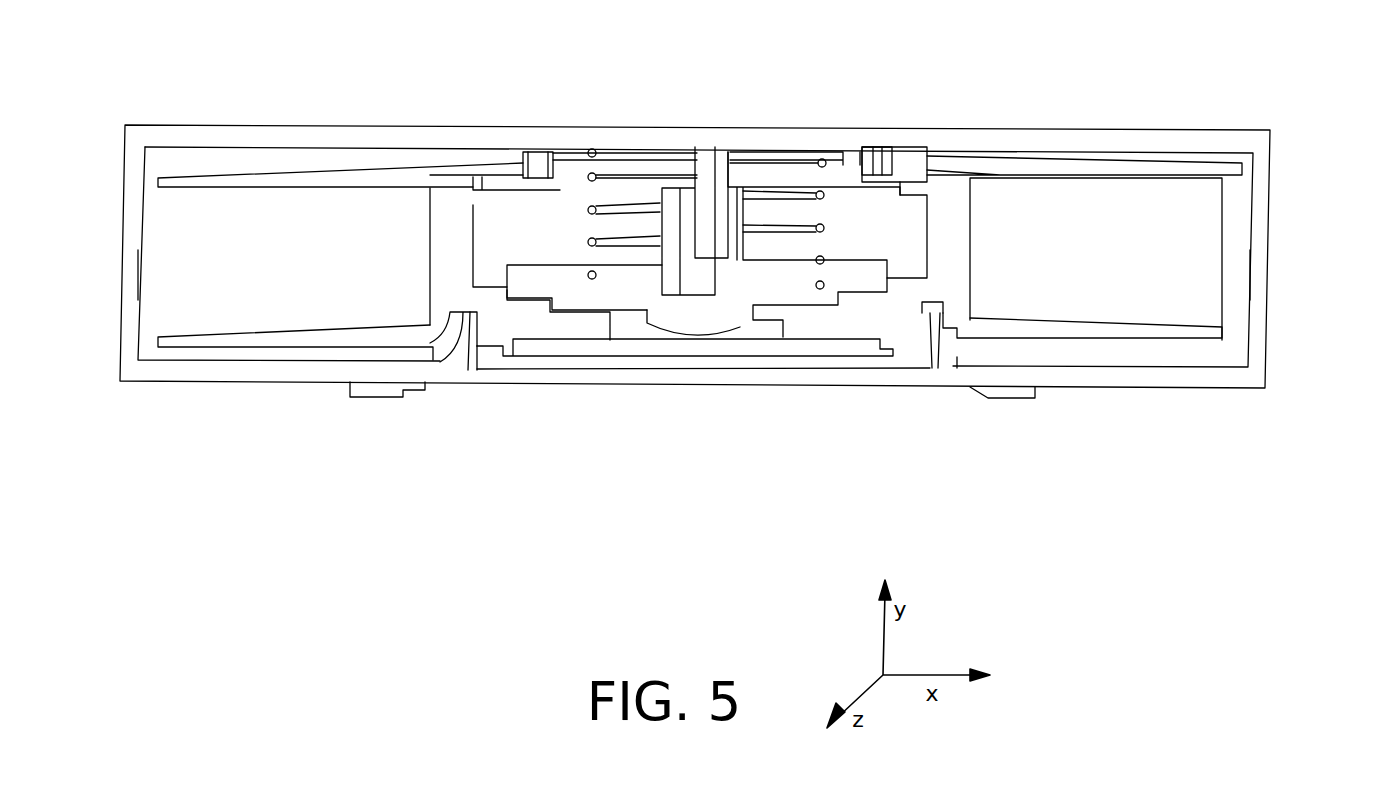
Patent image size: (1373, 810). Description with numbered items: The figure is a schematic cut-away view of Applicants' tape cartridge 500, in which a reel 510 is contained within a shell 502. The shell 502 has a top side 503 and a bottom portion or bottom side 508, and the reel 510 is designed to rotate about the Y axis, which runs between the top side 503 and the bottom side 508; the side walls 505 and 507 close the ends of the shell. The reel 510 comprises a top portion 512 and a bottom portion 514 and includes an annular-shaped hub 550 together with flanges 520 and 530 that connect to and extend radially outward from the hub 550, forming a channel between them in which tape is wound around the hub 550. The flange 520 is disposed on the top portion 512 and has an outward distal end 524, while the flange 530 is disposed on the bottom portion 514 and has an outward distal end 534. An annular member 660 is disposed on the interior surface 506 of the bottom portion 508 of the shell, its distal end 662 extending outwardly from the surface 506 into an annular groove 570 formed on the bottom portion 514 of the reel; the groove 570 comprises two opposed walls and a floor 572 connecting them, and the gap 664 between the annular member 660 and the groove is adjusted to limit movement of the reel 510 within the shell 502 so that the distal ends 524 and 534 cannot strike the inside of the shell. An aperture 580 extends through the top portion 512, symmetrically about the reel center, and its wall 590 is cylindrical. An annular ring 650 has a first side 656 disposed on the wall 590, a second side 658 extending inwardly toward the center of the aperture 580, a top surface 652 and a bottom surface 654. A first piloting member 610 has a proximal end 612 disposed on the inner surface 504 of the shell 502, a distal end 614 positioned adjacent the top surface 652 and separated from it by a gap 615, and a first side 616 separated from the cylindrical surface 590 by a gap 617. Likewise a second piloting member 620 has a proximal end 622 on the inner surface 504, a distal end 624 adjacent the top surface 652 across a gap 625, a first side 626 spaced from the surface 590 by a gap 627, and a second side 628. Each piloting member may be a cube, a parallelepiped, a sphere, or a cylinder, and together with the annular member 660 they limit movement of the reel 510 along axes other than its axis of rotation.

The tape cartridge 500 is at (655, 390).
The shell 502 is at (1120, 150).
The top side 503 is at (762, 149).
The inner surface 504 is at (223, 150).
The side wall 505 is at (140, 293).
The interior surface 506 is at (1187, 362).
The side wall 507 is at (1247, 307).
The bottom portion 508 is at (1057, 390).
The reel 510 is at (432, 178).
The top portion 512 is at (713, 147).
The bottom portion 514 is at (542, 330).
The flange 520 is at (322, 180).
The distal end 524 is at (172, 177).
The flange 530 is at (305, 337).
The distal end 534 is at (165, 350).
The hub 550 is at (955, 220).
The annular groove 570 is at (447, 333).
The floor 572 is at (935, 302).
The aperture 580 is at (837, 247).
The wall 590 is at (923, 223).
The first piloting member 610 is at (603, 152).
The proximal end 612 is at (552, 163).
The distal end 614 is at (548, 160).
The gap 615 is at (528, 180).
The first side 616 is at (528, 153).
The gap 617 is at (517, 178).
The second piloting member 620 is at (878, 150).
The proximal end 622 is at (870, 150).
The distal end 624 is at (885, 160).
The gap 625 is at (857, 187).
The first side 626 is at (905, 172).
The gap 627 is at (913, 172).
The second side 628 is at (864, 152).
The annular ring 650 is at (560, 193).
The top surface 652 is at (493, 160).
The bottom surface 654 is at (476, 212).
The first side 656 is at (467, 197).
The second side 658 is at (505, 177).
The annular member 660 is at (458, 372).
The distal end 662 is at (923, 317).
The gap 664 is at (945, 305).